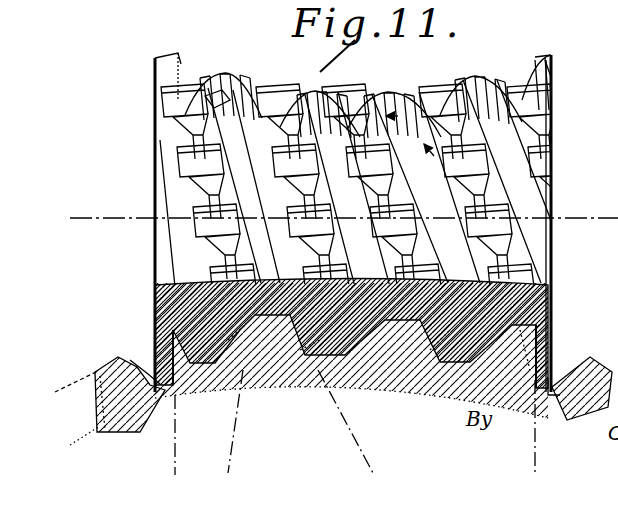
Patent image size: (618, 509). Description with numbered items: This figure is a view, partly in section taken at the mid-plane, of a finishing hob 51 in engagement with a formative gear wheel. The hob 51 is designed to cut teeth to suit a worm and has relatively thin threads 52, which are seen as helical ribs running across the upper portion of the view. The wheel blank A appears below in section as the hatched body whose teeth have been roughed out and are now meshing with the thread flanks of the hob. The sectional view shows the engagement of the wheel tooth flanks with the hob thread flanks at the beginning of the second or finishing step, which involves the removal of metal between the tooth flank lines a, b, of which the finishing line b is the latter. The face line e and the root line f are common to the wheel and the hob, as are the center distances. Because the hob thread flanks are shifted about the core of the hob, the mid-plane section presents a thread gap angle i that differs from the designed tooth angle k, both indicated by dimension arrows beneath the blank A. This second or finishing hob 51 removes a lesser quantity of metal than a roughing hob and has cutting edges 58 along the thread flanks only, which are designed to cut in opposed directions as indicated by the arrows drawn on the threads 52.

The hob 51 is at (559, 223).
The thin threads 52 is at (220, 92).
The cutting edges 58 is at (506, 256).
The wheel blank A is at (351, 349).
The tooth flank line a is at (130, 365).
The finishing line b is at (102, 392).
The face line e is at (75, 393).
The root line f is at (85, 441).
The designed tooth angle k is at (318, 381).
The thread gap angle i is at (340, 412).